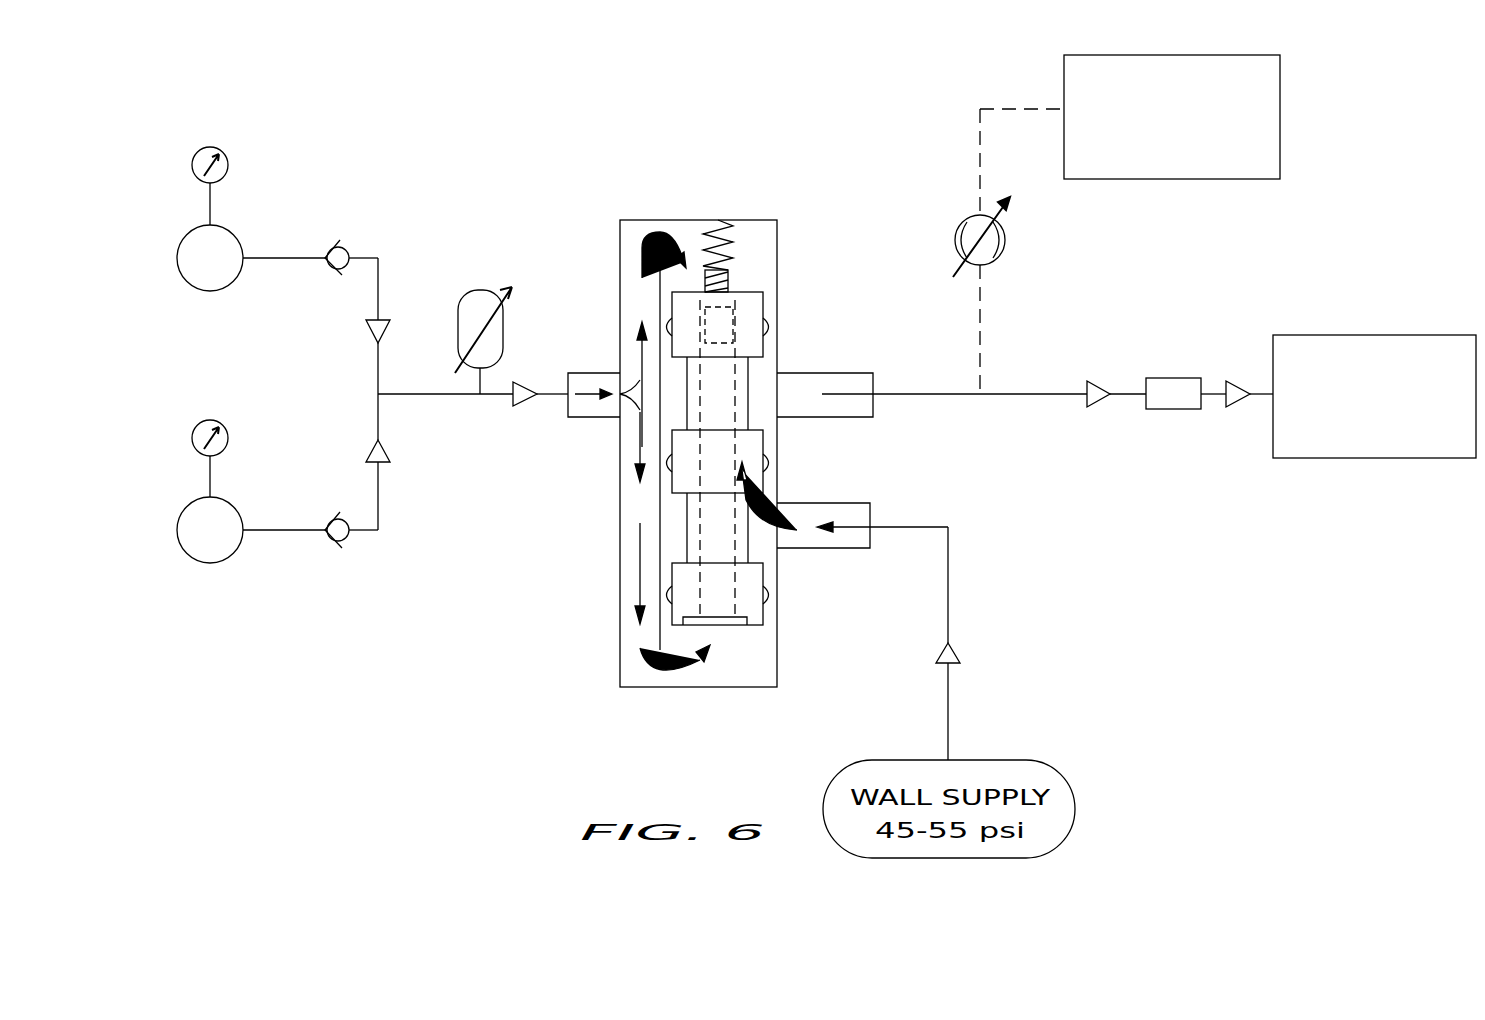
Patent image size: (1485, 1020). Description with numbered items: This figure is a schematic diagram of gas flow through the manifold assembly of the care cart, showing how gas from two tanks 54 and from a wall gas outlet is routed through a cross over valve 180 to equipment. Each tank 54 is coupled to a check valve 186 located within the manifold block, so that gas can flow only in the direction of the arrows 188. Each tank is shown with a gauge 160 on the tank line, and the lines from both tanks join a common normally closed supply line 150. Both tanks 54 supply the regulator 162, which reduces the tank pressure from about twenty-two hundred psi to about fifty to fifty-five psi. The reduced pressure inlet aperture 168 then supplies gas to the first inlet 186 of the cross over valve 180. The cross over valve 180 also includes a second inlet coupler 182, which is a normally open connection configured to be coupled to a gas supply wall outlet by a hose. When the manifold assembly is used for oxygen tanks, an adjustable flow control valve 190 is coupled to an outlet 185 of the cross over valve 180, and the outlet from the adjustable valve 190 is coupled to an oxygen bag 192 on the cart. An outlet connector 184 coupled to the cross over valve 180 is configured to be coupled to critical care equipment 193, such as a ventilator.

The tank 54 is at (190, 272).
The pressure gauge 160 is at (228, 160).
The check valve 186 is at (337, 244).
The arrows 188 is at (370, 336).
The normally closed supply line 150 is at (415, 398).
The regulator 162 is at (482, 292).
The inlet aperture 168 is at (553, 398).
The cross over valve 180 is at (640, 218).
The second inlet coupler 182 is at (848, 550).
The outlet 185 is at (815, 378).
The outlet connector 184 is at (1170, 378).
The adjustable flow control valve 190 is at (1005, 240).
The oxygen bag 192 is at (1281, 108).
The critical care equipment 193 is at (1342, 459).